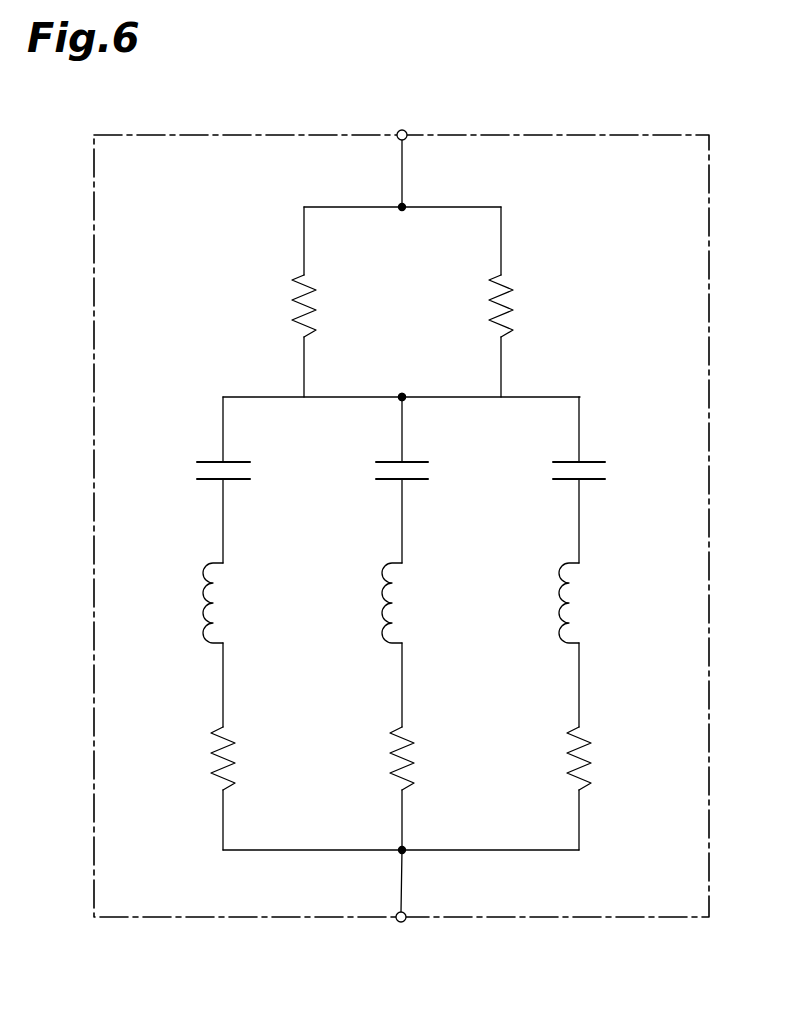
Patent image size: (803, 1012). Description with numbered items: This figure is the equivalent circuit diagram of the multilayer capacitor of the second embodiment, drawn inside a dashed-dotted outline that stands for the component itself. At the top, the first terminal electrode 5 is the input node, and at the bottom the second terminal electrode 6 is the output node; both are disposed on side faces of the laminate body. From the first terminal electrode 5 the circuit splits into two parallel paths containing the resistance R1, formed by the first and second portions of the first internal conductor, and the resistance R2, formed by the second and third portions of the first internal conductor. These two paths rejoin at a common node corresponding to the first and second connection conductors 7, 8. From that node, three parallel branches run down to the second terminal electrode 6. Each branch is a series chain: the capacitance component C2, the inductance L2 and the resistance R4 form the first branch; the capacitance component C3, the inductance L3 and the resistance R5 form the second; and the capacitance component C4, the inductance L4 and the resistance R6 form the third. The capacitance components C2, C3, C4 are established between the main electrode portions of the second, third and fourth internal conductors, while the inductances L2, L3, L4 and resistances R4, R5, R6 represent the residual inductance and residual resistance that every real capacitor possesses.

The first terminal electrode 5 is at (403, 127).
The second terminal electrode 6 is at (400, 925).
The first connection conductor 7 is at (400, 392).
The second connection conductor 8 is at (400, 392).
The resistance R1 is at (286, 275).
The resistance R2 is at (518, 275).
The capacitance component C2 is at (256, 492).
The capacitance component C3 is at (434, 492).
The capacitance component C4 is at (610, 492).
The inductance L2 is at (238, 643).
The inductance L3 is at (416, 643).
The inductance L4 is at (593, 643).
The resistance R4 is at (242, 790).
The resistance R5 is at (421, 790).
The resistance R6 is at (598, 790).